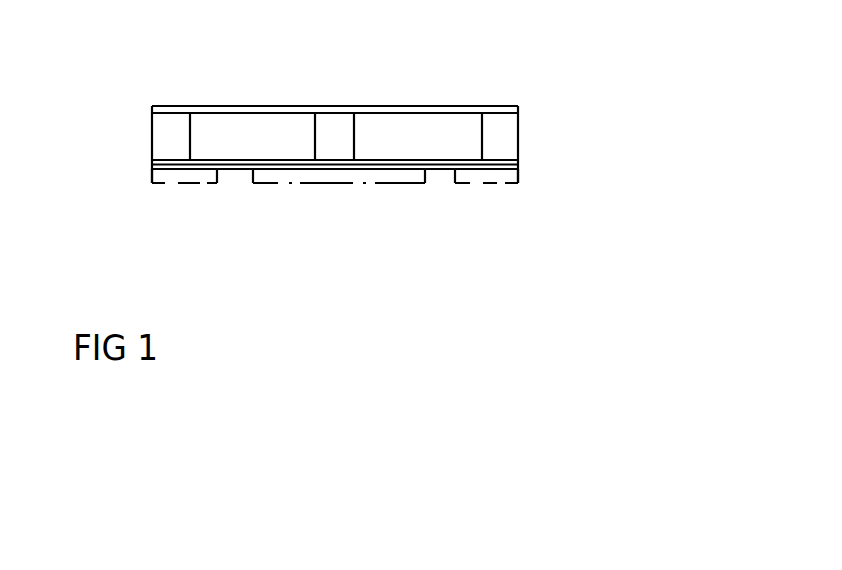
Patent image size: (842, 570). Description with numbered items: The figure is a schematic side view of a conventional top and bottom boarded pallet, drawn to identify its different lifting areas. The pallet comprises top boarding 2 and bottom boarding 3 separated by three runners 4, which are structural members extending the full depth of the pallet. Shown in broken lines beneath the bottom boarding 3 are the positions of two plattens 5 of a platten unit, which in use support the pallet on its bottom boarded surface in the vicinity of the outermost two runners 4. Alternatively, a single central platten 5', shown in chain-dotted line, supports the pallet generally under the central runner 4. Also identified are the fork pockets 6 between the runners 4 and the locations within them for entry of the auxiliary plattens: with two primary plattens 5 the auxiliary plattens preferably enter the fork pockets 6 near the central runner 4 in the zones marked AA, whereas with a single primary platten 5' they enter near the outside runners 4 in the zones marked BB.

The top boarding 2 is at (240, 107).
The bottom boarding 3 is at (382, 162).
The runners 4 is at (168, 138).
The plattens 5 is at (335, 213).
The single central platten 5' is at (339, 213).
The fork pockets 6 is at (273, 133).